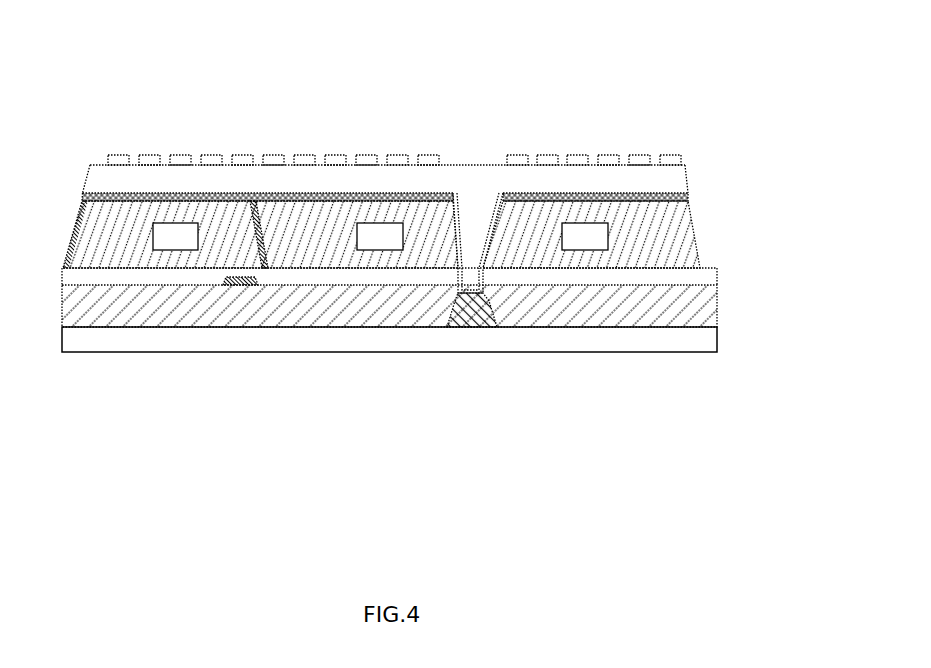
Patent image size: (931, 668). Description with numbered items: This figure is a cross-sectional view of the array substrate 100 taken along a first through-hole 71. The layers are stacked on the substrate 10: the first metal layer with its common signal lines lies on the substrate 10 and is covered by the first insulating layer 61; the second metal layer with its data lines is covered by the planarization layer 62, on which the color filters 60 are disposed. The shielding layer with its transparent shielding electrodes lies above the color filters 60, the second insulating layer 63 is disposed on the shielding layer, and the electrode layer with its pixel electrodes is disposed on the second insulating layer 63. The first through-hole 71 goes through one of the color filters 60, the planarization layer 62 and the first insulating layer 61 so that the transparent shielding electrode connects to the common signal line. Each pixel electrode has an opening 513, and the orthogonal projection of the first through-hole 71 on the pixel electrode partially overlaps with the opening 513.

The array substrate 100 is at (426, 34).
The substrate 10 is at (705, 342).
The opening 513 is at (448, 154).
The color filter 60 is at (672, 238).
The first insulating layer 61 is at (72, 313).
The planarization layer 62 is at (78, 277).
The second insulating layer 63 is at (108, 179).
The first through-hole 71 is at (475, 218).